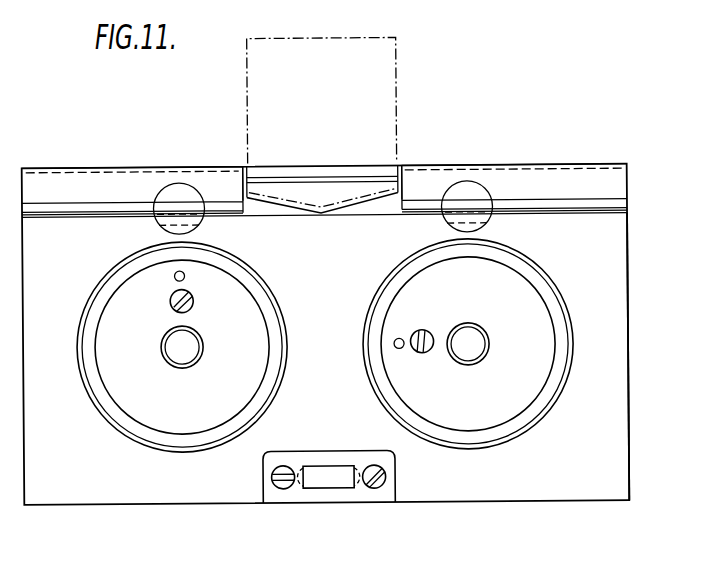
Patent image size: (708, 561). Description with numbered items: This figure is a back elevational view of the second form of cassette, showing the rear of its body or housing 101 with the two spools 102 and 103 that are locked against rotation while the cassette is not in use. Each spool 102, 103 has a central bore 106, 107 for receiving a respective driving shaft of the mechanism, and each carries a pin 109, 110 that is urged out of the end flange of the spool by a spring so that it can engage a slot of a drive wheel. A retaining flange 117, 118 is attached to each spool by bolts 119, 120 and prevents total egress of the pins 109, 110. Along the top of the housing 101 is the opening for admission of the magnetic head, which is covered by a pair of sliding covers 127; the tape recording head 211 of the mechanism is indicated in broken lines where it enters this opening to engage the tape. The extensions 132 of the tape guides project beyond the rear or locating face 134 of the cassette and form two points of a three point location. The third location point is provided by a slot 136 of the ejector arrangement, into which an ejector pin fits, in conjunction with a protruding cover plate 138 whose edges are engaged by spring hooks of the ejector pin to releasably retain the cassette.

The housing 101 is at (612, 230).
The spool 102 is at (527, 417).
The spool 103 is at (130, 428).
The central bore 106 is at (479, 338).
The central bore 107 is at (237, 350).
The pin 109 is at (402, 338).
The pin 110 is at (186, 274).
The retaining flange 117 is at (517, 285).
The retaining flange 118 is at (223, 282).
The bolt 119 is at (422, 351).
The bolt 120 is at (191, 305).
The sliding covers 127 is at (113, 177).
The extensions 132 is at (166, 226).
The locating face 134 is at (612, 463).
The slot 136 is at (322, 478).
The cover plate 138 is at (270, 495).
The tape recording head 211 is at (335, 120).